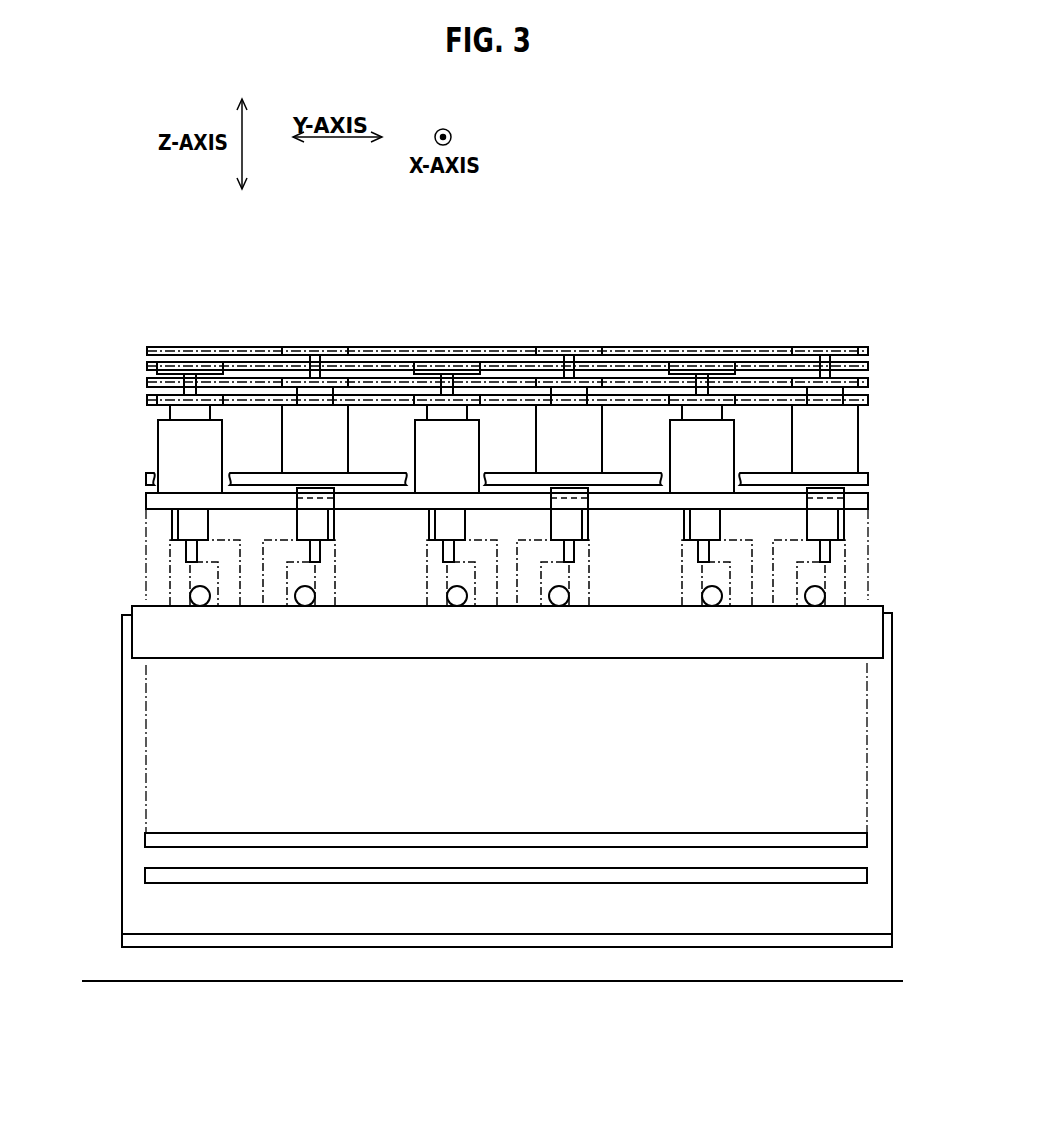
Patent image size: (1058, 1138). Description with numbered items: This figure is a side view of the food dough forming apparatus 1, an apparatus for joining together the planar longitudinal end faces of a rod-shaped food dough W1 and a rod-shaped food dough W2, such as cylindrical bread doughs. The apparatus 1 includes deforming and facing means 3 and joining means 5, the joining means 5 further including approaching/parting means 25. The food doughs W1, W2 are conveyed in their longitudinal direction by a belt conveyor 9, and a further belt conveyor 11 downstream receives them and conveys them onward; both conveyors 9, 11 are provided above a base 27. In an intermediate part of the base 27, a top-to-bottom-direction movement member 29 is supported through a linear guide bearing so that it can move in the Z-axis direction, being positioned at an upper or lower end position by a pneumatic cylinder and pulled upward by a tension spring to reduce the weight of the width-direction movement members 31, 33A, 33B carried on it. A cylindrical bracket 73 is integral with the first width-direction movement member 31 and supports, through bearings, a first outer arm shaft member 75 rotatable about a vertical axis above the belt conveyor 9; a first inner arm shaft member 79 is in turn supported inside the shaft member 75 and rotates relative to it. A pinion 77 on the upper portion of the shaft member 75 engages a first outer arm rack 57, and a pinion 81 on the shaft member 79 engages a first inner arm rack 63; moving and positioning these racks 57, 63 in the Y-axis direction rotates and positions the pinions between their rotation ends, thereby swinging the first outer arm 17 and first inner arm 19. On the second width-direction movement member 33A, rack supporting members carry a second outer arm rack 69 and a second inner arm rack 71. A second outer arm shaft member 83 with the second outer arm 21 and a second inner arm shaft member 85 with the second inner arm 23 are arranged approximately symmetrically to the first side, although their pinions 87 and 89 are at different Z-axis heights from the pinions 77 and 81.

The food dough forming apparatus 1 is at (783, 252).
The approaching/parting means 25 is at (464, 280).
The second inner arm rack 71 is at (147, 352).
The first inner arm rack 63 is at (147, 367).
The second outer arm rack 69 is at (147, 383).
The first outer arm rack 57 is at (147, 401).
The deforming and facing means 3 is at (265, 326).
The joining means 5 is at (477, 394).
The pinion 81 is at (206, 366).
The pinion 77 is at (177, 392).
The pinion 89 is at (305, 348).
The pinion 87 is at (350, 382).
The bracket 73 is at (158, 445).
The first width-direction movement member 31 is at (471, 623).
The second width-direction movement member 33A is at (255, 473).
The width-direction movement member 33B is at (468, 832).
The first outer arm shaft member 75 is at (208, 528).
The first inner arm shaft member 79 is at (186, 552).
The first outer arm 17 is at (170, 578).
The first inner arm 19 is at (244, 606).
The second outer arm shaft member 83 is at (335, 502).
The second inner arm shaft member 85 is at (322, 552).
The second outer arm 21 is at (340, 590).
The second inner arm 23 is at (262, 606).
The food dough W1 is at (193, 607).
The food dough W2 is at (305, 607).
The belt conveyor 9 is at (507, 677).
The belt conveyor 11 is at (692, 660).
The base 27 is at (467, 948).
The top-to-bottom-direction movement member 29 is at (436, 884).